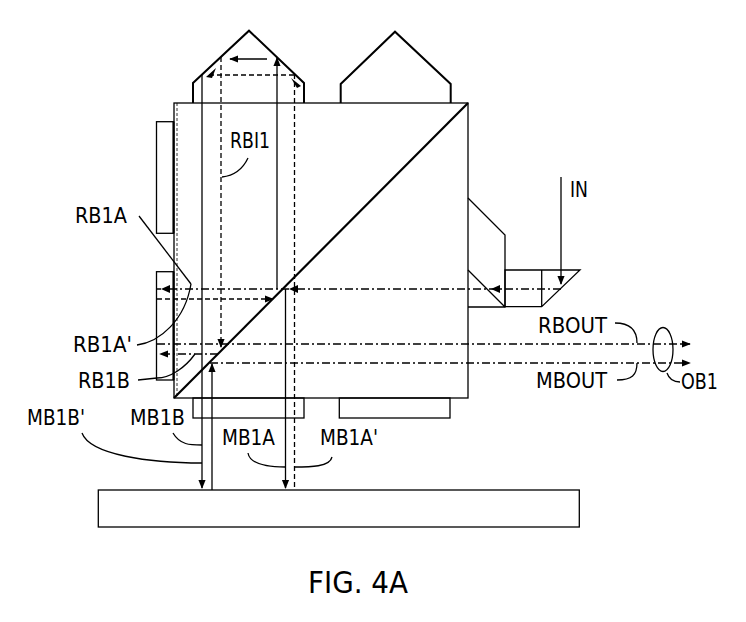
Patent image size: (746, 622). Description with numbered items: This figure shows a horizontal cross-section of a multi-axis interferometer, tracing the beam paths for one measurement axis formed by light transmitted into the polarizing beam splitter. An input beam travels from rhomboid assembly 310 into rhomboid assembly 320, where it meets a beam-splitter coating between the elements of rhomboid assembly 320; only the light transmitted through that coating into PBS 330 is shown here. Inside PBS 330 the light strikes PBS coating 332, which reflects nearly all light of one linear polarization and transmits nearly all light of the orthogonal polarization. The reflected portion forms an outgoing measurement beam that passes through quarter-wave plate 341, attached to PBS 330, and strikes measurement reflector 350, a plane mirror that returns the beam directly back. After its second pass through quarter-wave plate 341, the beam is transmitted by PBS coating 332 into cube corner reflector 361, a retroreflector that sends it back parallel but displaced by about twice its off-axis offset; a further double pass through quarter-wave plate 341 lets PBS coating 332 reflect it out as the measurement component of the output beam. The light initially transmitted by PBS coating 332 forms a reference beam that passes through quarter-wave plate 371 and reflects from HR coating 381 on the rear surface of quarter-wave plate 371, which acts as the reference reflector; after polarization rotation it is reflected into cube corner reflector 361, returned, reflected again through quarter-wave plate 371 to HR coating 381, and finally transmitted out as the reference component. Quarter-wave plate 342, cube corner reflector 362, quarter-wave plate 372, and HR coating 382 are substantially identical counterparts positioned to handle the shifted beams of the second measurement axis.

The rhomboid assembly 310 is at (525, 280).
The rhomboid assembly 320 is at (487, 233).
The PBS 330 is at (366, 171).
The PBS coating 332 is at (352, 219).
The quarter-wave plate 341 is at (252, 406).
The quarter-wave plate 342 is at (432, 408).
The measurement reflector 350 is at (500, 521).
The cube corner reflector 361 is at (248, 48).
The cube corner reflector 362 is at (415, 88).
The quarter-wave plate 371 is at (170, 270).
The quarter-wave plate 372 is at (172, 122).
The HR coating 381 is at (157, 328).
The HR coating 382 is at (157, 177).